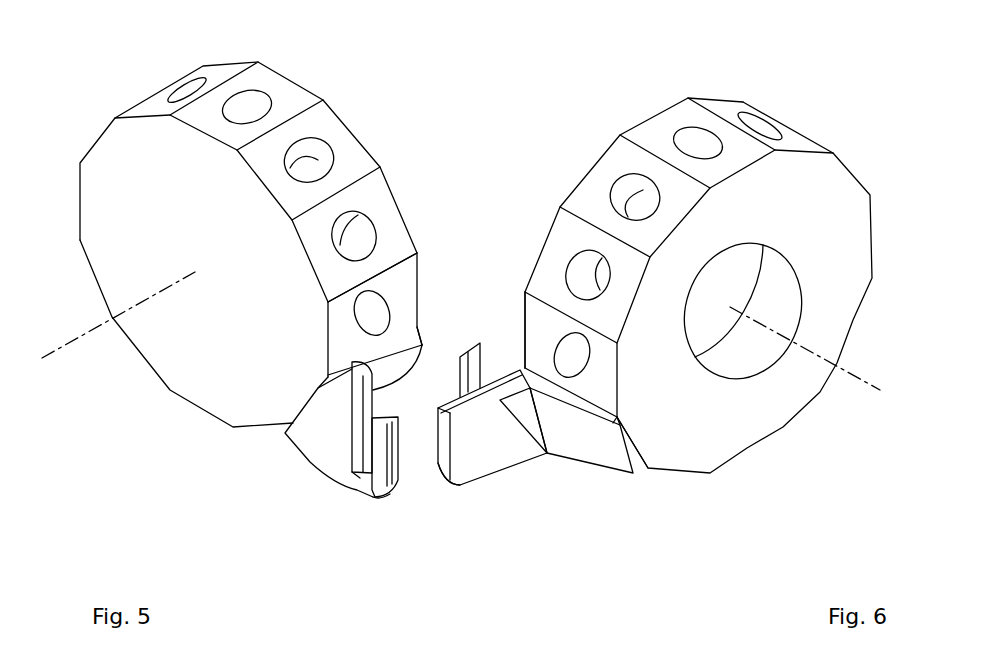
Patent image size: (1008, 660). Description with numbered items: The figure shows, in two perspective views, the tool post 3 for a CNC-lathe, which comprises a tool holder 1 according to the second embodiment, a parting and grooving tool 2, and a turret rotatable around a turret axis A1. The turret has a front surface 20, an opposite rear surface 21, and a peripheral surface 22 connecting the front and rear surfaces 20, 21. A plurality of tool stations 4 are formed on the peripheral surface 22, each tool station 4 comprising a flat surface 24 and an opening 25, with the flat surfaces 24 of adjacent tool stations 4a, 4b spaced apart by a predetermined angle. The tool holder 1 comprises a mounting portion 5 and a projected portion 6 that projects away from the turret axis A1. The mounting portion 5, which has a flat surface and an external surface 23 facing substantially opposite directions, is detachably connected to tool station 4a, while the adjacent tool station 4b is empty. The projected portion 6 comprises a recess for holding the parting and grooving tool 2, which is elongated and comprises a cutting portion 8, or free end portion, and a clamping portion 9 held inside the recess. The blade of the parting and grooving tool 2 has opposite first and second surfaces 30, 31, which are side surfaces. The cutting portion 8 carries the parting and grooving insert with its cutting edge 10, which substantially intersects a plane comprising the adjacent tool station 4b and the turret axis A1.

In FIG. 5, the tool holder 1 is at (323, 457).
In FIG. 6, the tool holder 1 is at (515, 453).
In FIG. 5, the parting and grooving tool 2 is at (357, 442).
In FIG. 5, the tool post 3 is at (118, 70).
In FIG. 6, the tool post 3 is at (850, 92).
In FIG. 5, the tool station 4 is at (353, 165).
In FIG. 6, the tool station 4 is at (650, 137).
In FIG. 5, the tool station 4a is at (324, 437).
In FIG. 6, the tool station 4a is at (640, 442).
In FIG. 5, the adjacent tool station 4b is at (356, 305).
In FIG. 6, the adjacent tool station 4b is at (591, 343).
In FIG. 5, the mounting portion 5 is at (418, 343).
In FIG. 6, the mounting portion 5 is at (608, 455).
In FIG. 5, the projected portion 6 is at (380, 477).
In FIG. 6, the projected portion 6 is at (468, 455).
In FIG. 6, the cutting portion 8 is at (473, 353).
In FIG. 5, the clamping portion 9 is at (358, 455).
In FIG. 6, the cutting edge 10 is at (462, 358).
In FIG. 5, the front surface 20 is at (218, 398).
In FIG. 6, the rear surface 21 is at (738, 428).
In FIG. 5, the peripheral surface 22 is at (276, 88).
In FIG. 6, the peripheral surface 22 is at (727, 112).
In FIG. 6, the external surface 23 is at (583, 442).
In FIG. 5, the flat surface 24 is at (315, 125).
In FIG. 6, the flat surface 24 is at (683, 103).
In FIG. 5, the opening 25 is at (313, 158).
In FIG. 6, the opening 25 is at (690, 142).
In FIG. 5, the first surface 30 is at (358, 397).
In FIG. 6, the second surface 31 is at (470, 375).
In FIG. 5, the turret axis A1 is at (100, 329).
In FIG. 6, the turret axis A1 is at (827, 362).